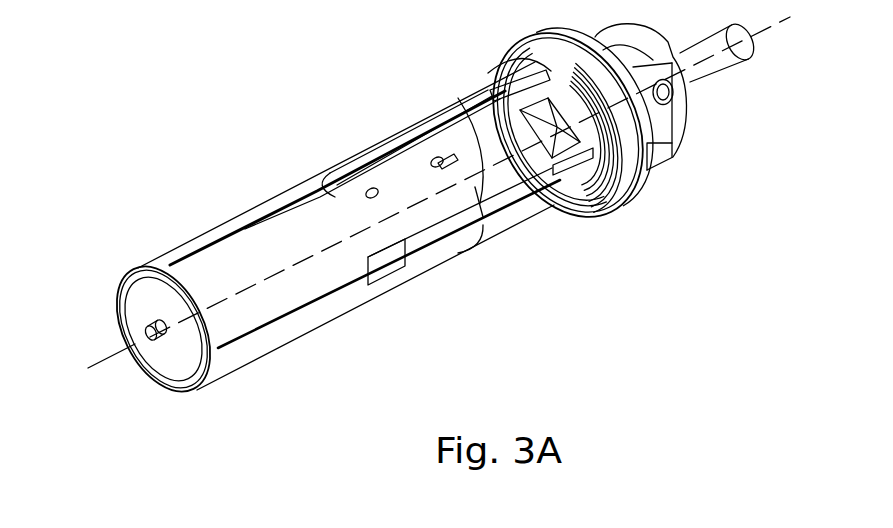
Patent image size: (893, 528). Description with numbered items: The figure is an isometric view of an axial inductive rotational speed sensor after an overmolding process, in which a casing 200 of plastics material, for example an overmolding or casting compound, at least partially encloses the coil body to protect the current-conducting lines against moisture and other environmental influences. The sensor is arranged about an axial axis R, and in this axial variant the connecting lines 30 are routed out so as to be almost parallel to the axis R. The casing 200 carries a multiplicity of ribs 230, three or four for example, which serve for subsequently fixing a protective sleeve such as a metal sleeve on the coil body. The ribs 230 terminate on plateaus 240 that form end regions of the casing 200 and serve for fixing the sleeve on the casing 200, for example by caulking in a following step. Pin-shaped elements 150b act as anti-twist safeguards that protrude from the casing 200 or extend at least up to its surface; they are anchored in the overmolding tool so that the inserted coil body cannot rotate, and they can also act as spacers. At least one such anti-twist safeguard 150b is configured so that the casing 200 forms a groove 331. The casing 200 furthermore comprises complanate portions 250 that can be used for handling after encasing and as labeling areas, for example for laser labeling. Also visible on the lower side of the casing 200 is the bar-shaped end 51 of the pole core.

The axial axis R is at (108, 357).
The casing 200 is at (262, 282).
The ribs 230 is at (400, 152).
The groove 331 is at (452, 158).
The pin-shaped elements 150b is at (438, 167).
The plateaus 240 is at (562, 170).
The complanate portions 250 is at (673, 128).
The connecting lines 30 is at (730, 58).
The bar-shaped end 51 is at (153, 339).